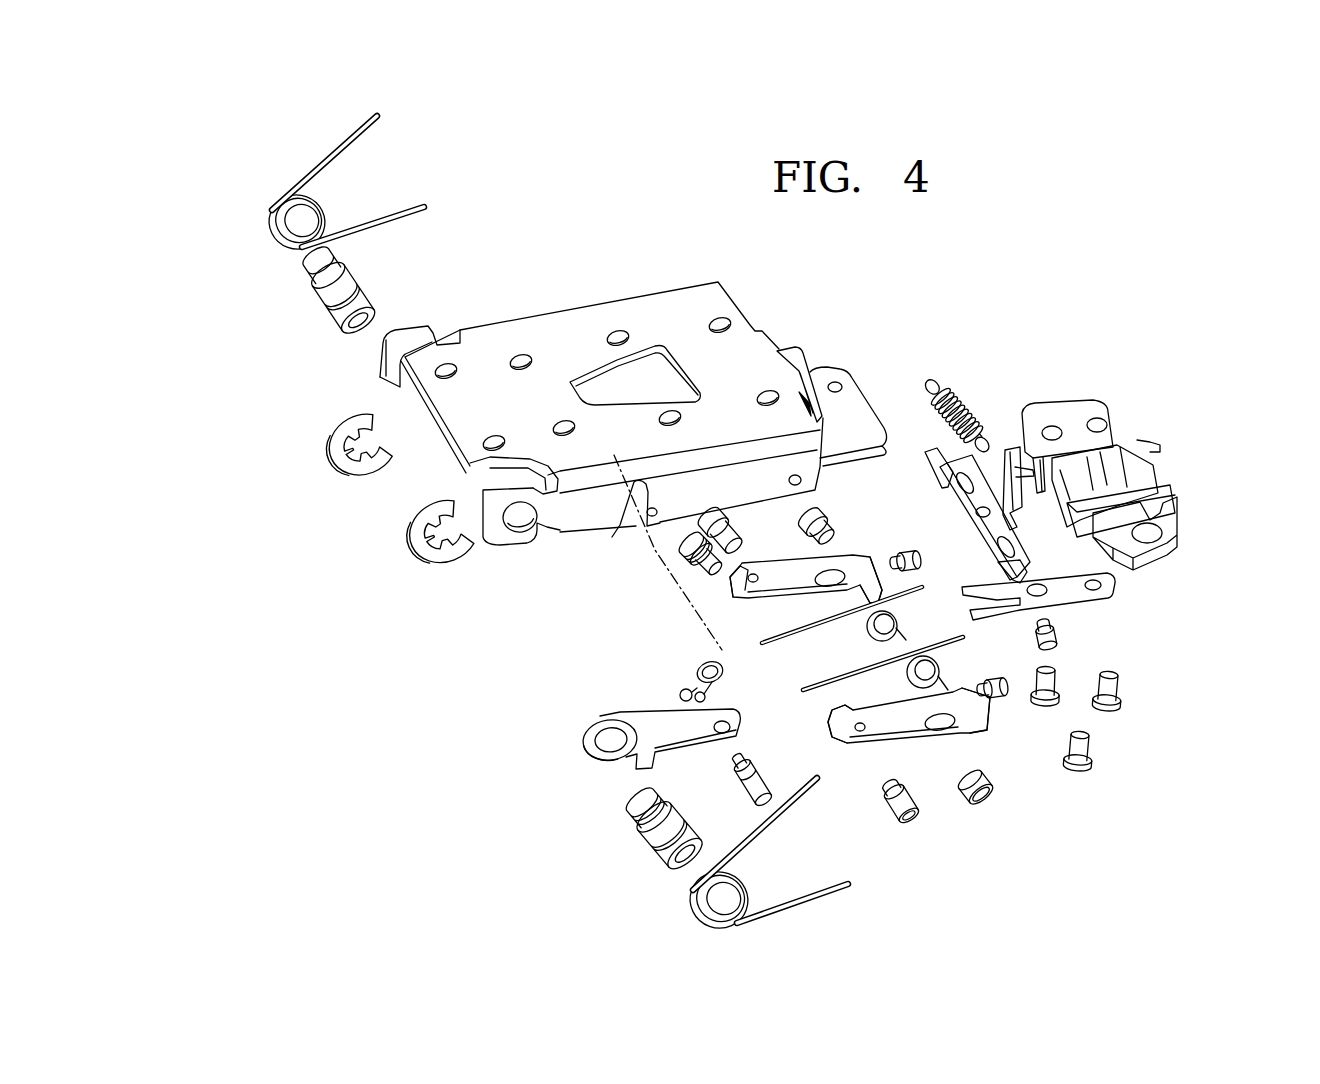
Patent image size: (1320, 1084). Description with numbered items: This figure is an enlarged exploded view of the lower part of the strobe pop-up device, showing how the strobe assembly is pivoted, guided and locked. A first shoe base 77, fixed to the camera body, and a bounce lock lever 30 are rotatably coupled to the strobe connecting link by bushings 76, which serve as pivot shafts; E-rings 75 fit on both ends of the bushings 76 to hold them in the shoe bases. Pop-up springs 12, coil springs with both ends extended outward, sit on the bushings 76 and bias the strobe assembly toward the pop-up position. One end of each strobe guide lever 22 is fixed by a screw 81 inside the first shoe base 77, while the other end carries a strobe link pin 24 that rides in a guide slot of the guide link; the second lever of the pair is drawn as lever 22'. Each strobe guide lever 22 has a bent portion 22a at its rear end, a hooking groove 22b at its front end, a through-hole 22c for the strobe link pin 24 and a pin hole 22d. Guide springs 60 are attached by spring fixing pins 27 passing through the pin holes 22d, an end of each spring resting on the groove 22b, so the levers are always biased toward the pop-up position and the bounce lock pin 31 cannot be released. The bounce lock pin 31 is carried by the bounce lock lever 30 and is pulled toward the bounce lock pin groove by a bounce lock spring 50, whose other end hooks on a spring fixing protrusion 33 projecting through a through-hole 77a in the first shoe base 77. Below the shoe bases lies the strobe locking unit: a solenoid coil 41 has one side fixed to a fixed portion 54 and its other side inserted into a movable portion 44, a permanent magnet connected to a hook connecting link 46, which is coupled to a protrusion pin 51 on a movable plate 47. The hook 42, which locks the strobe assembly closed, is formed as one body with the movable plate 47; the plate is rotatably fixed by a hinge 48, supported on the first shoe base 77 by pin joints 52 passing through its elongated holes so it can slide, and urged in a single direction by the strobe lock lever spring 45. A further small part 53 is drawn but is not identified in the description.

The pop-up spring 12 is at (268, 235).
The strobe guide lever 22 is at (806, 556).
The second latch lever 22' is at (909, 744).
The bent portion 22a is at (870, 570).
The groove 22b is at (733, 590).
The through-hole 22c is at (752, 587).
The pin hole 22d is at (840, 570).
The strobe link pin 24 is at (692, 563).
The spring fixing pin 27 is at (827, 517).
The bounce lock lever 30 is at (580, 752).
The bounce lock pin 31 is at (747, 782).
The spring fixing protrusion 33 is at (697, 572).
The solenoid coil 41 is at (1127, 457).
The hook 42 is at (1011, 450).
The movable portion 44 is at (1170, 530).
The strobe lock lever spring 45 is at (957, 387).
The hook connecting link 46 is at (1107, 600).
The movable plate 47 is at (977, 540).
The hinge 48 is at (1113, 708).
The bounce lock spring 50 is at (693, 672).
The protrusion pin 51 is at (1053, 642).
The pin joint 52 is at (1078, 767).
The rivet 53 is at (1043, 703).
The fixed portion 54 is at (1067, 418).
The guide spring 60 is at (807, 687).
The E-ring 75 is at (410, 543).
The bushing 76 is at (327, 300).
The first shoe base 77 is at (673, 312).
The through-hole 77a is at (637, 540).
The screw 81 is at (910, 553).